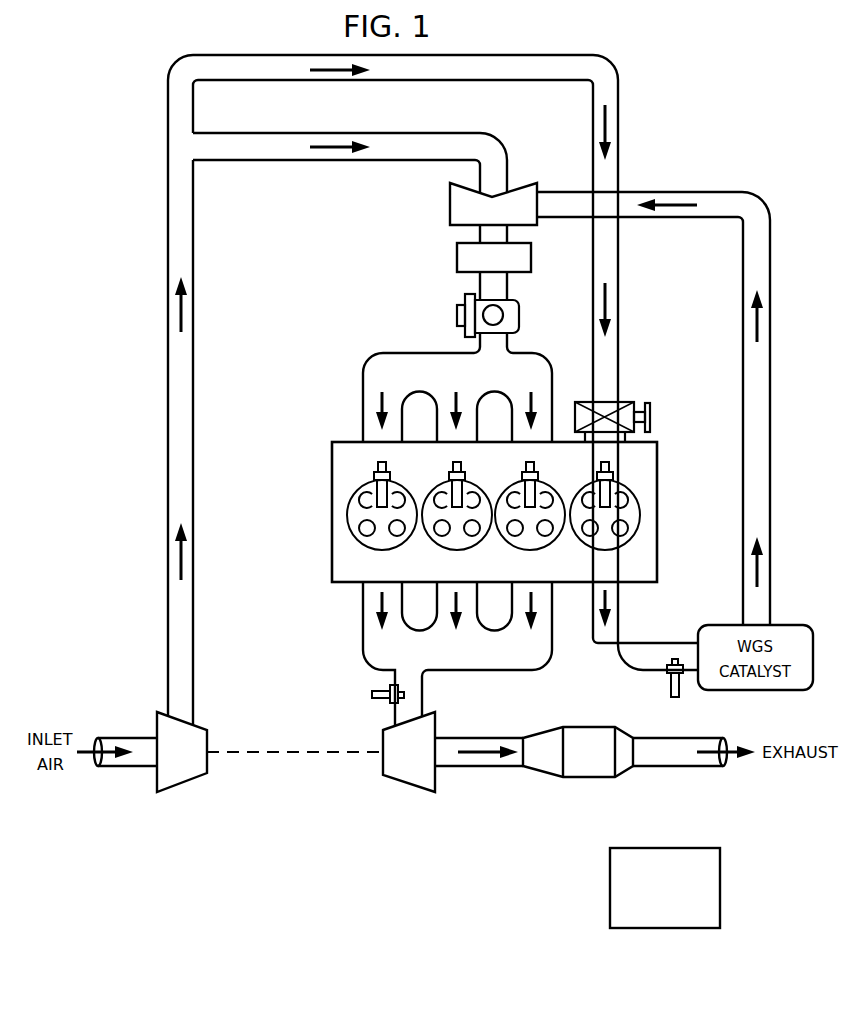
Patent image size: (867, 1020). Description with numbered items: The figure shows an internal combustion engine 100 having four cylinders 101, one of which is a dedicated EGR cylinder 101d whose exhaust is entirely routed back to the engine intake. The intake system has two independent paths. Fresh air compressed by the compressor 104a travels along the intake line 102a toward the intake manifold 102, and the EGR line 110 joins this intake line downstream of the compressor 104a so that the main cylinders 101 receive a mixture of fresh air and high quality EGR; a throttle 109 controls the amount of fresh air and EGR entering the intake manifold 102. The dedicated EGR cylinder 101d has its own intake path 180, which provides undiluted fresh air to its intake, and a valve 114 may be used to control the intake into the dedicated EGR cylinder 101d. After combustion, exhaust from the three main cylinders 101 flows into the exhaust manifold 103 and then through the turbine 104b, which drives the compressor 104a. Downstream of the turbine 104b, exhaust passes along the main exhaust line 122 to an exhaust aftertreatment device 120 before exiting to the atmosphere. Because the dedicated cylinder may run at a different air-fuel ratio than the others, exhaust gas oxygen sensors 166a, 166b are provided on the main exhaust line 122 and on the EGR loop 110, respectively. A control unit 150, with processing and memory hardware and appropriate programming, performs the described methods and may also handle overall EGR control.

The internal combustion engine 100 is at (300, 480).
The cylinder 101 is at (352, 515).
The dedicated EGR cylinder 101d is at (630, 513).
The intake manifold 102 is at (364, 378).
The intake line 102a is at (283, 160).
The exhaust manifold 103 is at (368, 640).
The compressor 104a is at (183, 794).
The turbine 104b is at (410, 785).
The throttle 109 is at (457, 313).
The EGR line 110 is at (772, 372).
The valve 114 is at (652, 417).
The exhaust aftertreatment device 120 is at (592, 778).
The main exhaust line 122 is at (480, 768).
The control unit 150 is at (665, 928).
The sensor 166a is at (372, 694).
The sensor 166b is at (668, 685).
The intake path 180 is at (545, 55).